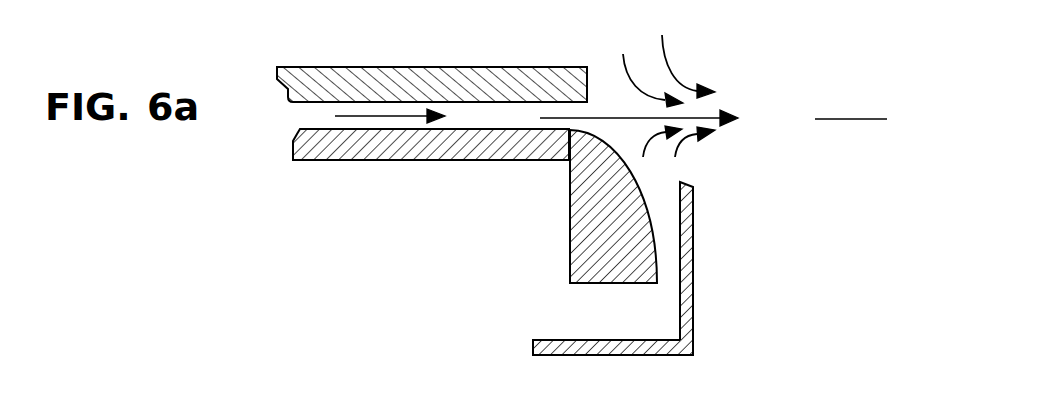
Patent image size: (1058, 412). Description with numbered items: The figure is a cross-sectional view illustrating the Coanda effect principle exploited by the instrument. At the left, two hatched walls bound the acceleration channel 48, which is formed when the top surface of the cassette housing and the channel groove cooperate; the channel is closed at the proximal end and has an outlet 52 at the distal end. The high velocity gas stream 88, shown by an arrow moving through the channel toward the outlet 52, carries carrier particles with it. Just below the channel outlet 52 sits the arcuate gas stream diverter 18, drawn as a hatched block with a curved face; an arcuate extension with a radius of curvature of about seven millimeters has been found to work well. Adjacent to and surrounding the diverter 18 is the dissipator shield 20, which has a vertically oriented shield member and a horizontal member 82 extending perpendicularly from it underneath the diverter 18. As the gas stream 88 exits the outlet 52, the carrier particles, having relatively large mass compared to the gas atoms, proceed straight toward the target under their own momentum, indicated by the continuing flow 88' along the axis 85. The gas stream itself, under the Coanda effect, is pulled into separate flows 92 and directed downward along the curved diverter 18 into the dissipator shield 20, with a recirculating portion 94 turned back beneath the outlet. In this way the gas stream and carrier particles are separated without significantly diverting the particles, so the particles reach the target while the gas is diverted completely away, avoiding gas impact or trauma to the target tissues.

The acceleration channel 48 is at (318, 117).
The outlet 52 is at (591, 110).
The gas stream 88 is at (405, 117).
The outgoing fluid flow 88' is at (658, 118).
The flow axis 85 is at (868, 120).
The secondary fluid flows 92 is at (664, 87).
The recirculation flow 94 is at (655, 174).
The gas stream diverter 18 is at (585, 240).
The dissipator shield 20 is at (692, 263).
The horizontal member 82 is at (587, 353).